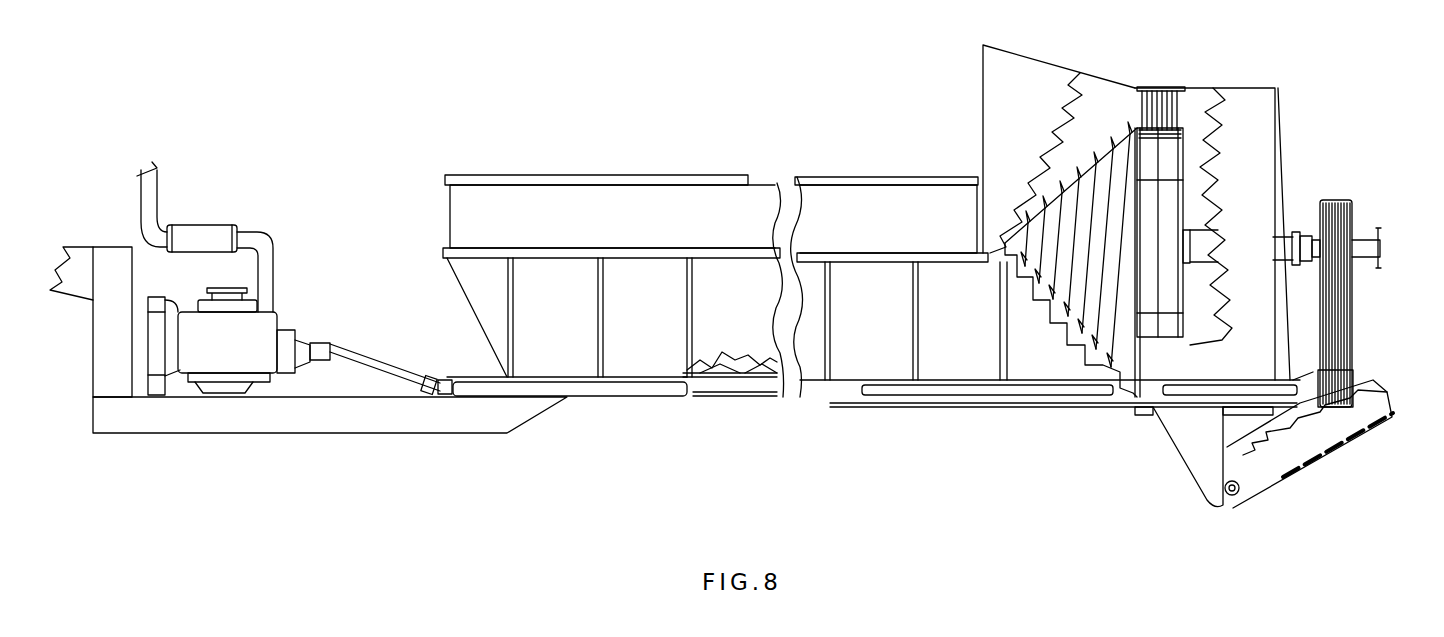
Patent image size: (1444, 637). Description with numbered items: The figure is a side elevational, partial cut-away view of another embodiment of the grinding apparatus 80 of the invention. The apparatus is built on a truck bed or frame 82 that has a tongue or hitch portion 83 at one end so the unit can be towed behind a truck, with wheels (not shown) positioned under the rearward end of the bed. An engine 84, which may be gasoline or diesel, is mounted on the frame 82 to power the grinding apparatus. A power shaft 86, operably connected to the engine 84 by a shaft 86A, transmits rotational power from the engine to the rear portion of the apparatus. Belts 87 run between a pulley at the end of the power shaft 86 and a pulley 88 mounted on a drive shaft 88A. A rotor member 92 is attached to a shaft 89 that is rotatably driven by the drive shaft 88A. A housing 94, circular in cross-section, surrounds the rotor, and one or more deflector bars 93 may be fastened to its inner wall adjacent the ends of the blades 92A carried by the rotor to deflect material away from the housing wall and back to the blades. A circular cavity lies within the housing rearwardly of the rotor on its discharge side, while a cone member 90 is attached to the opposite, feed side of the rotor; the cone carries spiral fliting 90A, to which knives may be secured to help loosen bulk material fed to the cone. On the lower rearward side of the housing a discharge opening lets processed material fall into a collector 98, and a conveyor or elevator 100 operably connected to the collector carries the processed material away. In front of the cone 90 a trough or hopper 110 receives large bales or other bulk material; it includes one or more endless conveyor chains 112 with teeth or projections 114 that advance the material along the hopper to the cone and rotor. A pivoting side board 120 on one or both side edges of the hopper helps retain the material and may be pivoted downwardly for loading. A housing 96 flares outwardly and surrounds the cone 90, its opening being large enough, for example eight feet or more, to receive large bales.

The apparatus 80 is at (675, 107).
The truck bed or frame 82 is at (245, 427).
The tongue or hitch portion 83 is at (82, 252).
The engine 84 is at (274, 314).
The power shaft 86 is at (625, 392).
The shaft 86A is at (358, 360).
The belts 87 is at (1352, 325).
The pulley 88 is at (1355, 210).
The drive shaft 88A is at (1363, 238).
The shaft 89 is at (1210, 240).
The cone member 90 is at (1093, 157).
The spiral fliting 90A is at (1077, 177).
The rotor member 92 is at (1187, 153).
The blades 92A is at (1156, 90).
The deflector bars 93 is at (1175, 88).
The housing 94 is at (1247, 82).
The housing 96 is at (1037, 22).
The collector 98 is at (1182, 467).
The conveyor or elevator 100 is at (1352, 453).
The trough or hopper 110 is at (452, 272).
The endless conveyor chains 112 is at (765, 397).
The teeth or projections 114 is at (743, 395).
The pivoting side board 120 is at (488, 180).